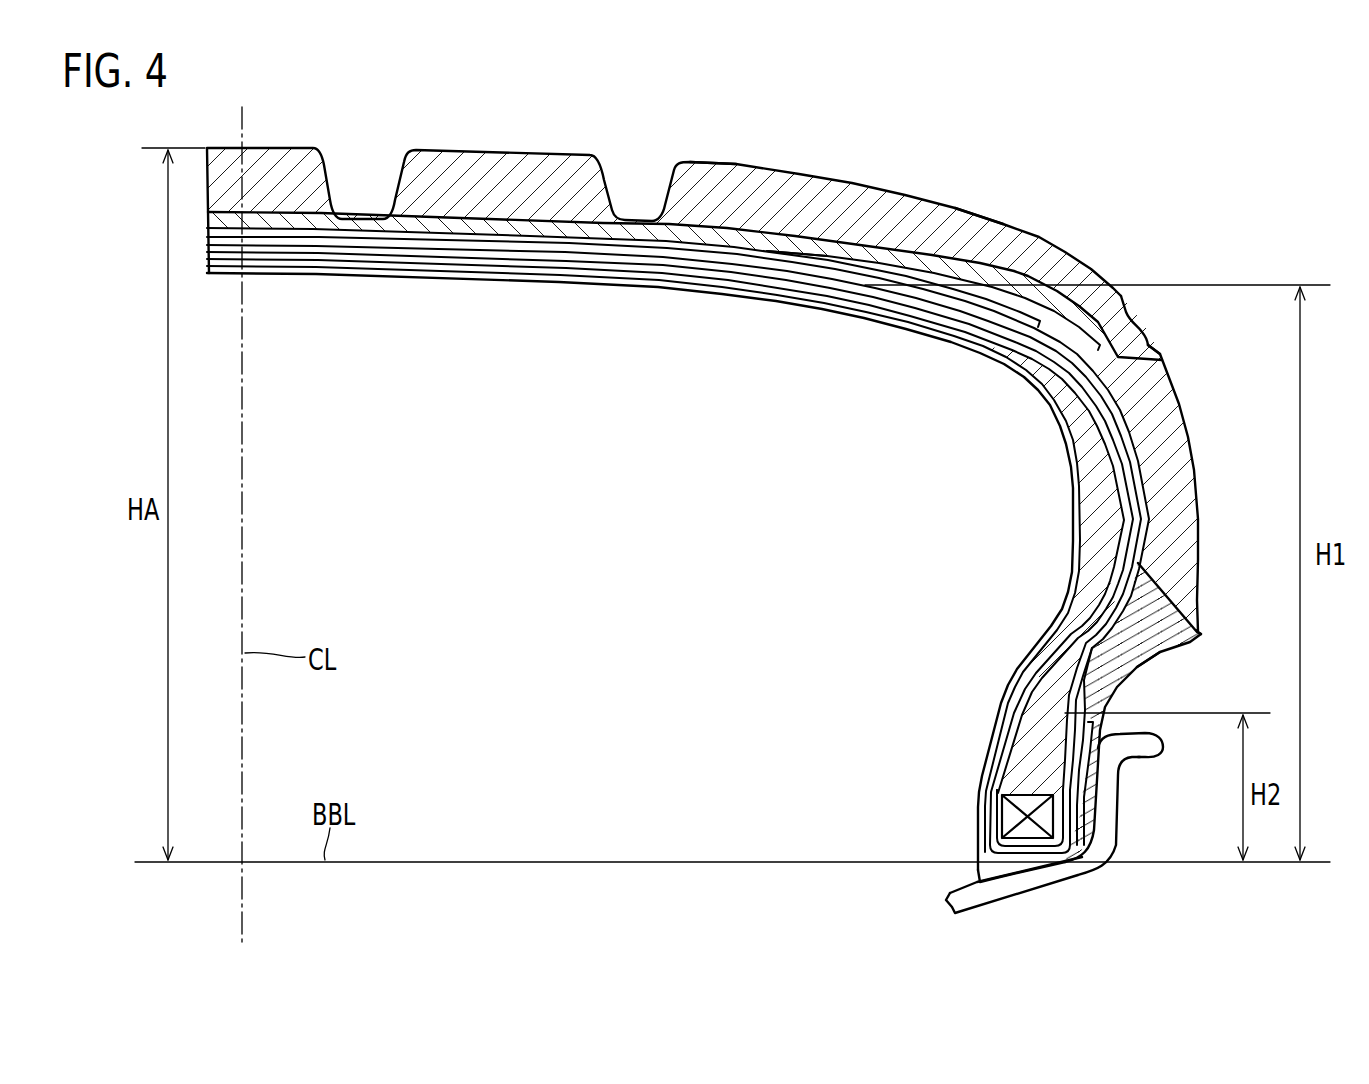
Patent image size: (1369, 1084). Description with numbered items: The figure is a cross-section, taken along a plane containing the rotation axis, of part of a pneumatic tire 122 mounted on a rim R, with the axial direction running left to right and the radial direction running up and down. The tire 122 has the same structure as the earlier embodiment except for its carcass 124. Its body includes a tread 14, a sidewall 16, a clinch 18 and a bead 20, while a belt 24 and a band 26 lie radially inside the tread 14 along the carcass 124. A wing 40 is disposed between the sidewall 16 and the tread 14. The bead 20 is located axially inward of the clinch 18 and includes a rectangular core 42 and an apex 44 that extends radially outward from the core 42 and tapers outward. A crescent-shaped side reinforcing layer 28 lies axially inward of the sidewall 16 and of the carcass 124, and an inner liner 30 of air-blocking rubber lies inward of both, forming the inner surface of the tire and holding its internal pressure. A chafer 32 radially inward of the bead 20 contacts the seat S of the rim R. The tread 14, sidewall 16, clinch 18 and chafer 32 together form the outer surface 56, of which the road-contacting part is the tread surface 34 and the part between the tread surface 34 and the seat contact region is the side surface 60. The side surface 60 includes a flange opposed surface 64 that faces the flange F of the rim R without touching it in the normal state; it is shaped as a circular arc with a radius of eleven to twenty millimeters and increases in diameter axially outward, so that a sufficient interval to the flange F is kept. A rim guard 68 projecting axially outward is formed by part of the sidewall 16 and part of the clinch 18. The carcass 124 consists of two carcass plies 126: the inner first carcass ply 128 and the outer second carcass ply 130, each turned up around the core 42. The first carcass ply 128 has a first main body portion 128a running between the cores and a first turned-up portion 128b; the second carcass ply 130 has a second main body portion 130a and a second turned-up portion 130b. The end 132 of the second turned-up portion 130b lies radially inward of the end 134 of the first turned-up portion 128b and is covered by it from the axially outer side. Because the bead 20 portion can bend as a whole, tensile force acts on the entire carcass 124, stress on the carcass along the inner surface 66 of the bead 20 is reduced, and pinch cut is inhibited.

The tread 14 is at (808, 156).
The sidewall 16 is at (1204, 428).
The clinch 18 is at (1188, 655).
The bead 20 is at (1000, 780).
The belt 24 is at (366, 268).
The band 26 is at (467, 221).
The side reinforcing layer 28 is at (1052, 407).
The inner liner 30 is at (632, 299).
The chafer 32 is at (968, 877).
The tread surface 34 is at (735, 160).
The wing 40 is at (1130, 342).
The core 42 is at (1005, 830).
The apex 44 is at (1062, 680).
The outer surface 56 is at (975, 207).
The side surface 60 is at (1160, 360).
The flange opposed surface 64 is at (1165, 640).
The inner surface of the bead 66 is at (1016, 729).
The rim guard 68 is at (1216, 640).
The pneumatic tire 122 is at (1142, 180).
The carcass 124 is at (578, 372).
The carcass ply 126 is at (528, 262).
The first carcass ply 128 is at (741, 549).
The second carcass ply 130 is at (696, 520).
The first main body portion 128a is at (1128, 490).
The first turned-up portion 128b is at (1147, 467).
The second main body portion 130a is at (1122, 462).
The second turned-up portion 130b is at (1070, 783).
The end of the second turned-up portion 132 is at (1082, 710).
The end of the first turned-up portion 134 is at (830, 288).
The flange F is at (1112, 826).
The seat S is at (998, 887).
The rim R is at (1072, 882).